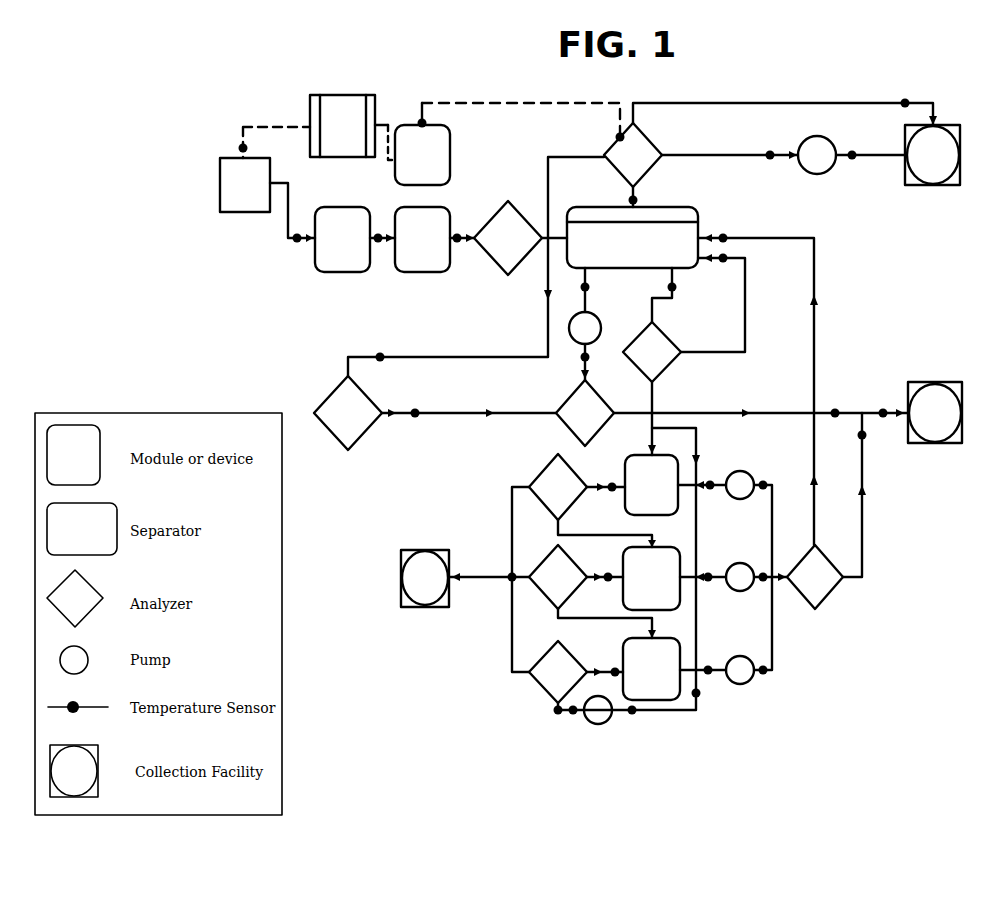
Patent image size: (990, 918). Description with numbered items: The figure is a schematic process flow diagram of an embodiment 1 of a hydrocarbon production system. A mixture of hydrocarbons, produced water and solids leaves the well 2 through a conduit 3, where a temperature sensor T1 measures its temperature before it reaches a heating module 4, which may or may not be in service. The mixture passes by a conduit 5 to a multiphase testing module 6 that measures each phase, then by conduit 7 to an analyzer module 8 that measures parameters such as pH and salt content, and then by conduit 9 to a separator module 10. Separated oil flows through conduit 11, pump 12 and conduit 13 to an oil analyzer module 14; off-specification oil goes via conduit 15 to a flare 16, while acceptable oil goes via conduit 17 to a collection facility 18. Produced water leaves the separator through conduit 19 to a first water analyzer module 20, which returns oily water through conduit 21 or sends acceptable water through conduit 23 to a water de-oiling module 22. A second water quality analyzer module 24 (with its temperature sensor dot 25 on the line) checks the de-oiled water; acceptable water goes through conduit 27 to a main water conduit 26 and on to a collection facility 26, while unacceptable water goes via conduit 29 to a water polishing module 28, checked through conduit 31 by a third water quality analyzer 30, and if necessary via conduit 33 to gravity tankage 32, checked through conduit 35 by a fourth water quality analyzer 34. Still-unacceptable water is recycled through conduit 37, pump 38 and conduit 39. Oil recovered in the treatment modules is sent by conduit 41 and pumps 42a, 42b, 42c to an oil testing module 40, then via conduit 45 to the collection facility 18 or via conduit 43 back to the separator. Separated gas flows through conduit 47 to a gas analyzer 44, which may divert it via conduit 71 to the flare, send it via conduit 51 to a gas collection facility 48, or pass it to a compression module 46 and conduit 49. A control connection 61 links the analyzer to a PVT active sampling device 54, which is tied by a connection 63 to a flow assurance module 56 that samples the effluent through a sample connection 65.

The embodiment 1 is at (872, 86).
The well 2 is at (220, 183).
The conduit 3 is at (292, 196).
The temperature sensor T1 is at (297, 244).
The heating module 4 is at (343, 207).
The conduit 5 is at (379, 232).
The multiphase testing module 6 is at (450, 212).
The conduit 7 is at (459, 244).
The analyzer module 8 is at (516, 204).
The conduit 9 is at (554, 234).
The separator module 10 is at (700, 212).
The conduit 11 is at (589, 288).
The pump 12 is at (600, 323).
The conduit 13 is at (590, 360).
The oil analyzer module 14 is at (566, 394).
The conduit 15 is at (463, 414).
The flare 16 is at (330, 433).
The conduit 17 is at (730, 413).
The collection facility 18 is at (935, 382).
The conduit 19 is at (676, 296).
The first water analyzer module 20 is at (673, 340).
The conduit 21 is at (746, 302).
The water de-oiling module 22 is at (640, 455).
The conduit 23 is at (656, 394).
The second water quality analyzer module 24 is at (540, 468).
The temperature sensor 25 is at (611, 481).
The main water conduit 26 is at (427, 550).
The conduit 27 is at (510, 514).
The water polishing module 28 is at (680, 606).
The conduit 29 is at (582, 535).
The third water quality analyzer 30 is at (546, 556).
The conduit 31 is at (609, 572).
The gravity tankage module 32 is at (652, 702).
The conduit 33 is at (600, 619).
The fourth water quality analyzer 34 is at (541, 692).
The conduit 35 is at (611, 668).
The conduit 37 is at (573, 716).
The pump 38 is at (610, 723).
The conduit 39 is at (690, 713).
The oil testing module 40 is at (832, 598).
The conduit 41 is at (774, 632).
The pump 42a is at (740, 500).
The pump 42b is at (740, 592).
The pump 42c is at (740, 685).
The conduit 43 is at (816, 348).
The gas analyzer 44 is at (650, 141).
The conduit 45 is at (864, 510).
The compression module 46 is at (817, 175).
The conduit 47 is at (716, 155).
The gas collection facility 48 is at (935, 186).
The conduit 49 is at (882, 157).
The conduit 51 is at (766, 103).
The PVT active sampling device 54 is at (450, 156).
The flow assurance module 56 is at (342, 95).
The control connection 61 is at (520, 103).
The control line 63 is at (392, 121).
The sample connection 65 is at (265, 127).
The conduit 71 is at (576, 157).